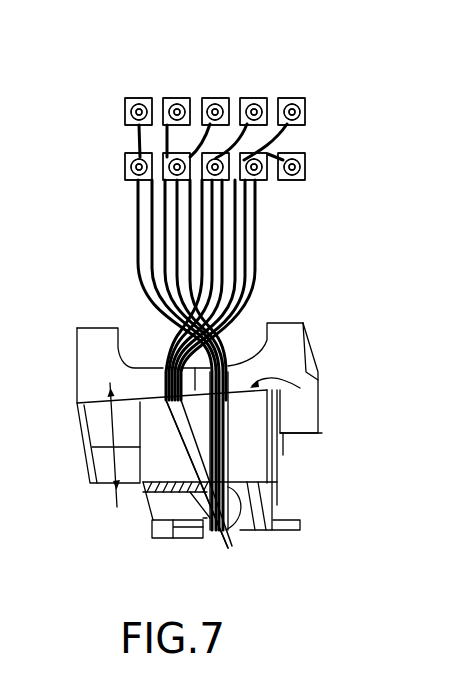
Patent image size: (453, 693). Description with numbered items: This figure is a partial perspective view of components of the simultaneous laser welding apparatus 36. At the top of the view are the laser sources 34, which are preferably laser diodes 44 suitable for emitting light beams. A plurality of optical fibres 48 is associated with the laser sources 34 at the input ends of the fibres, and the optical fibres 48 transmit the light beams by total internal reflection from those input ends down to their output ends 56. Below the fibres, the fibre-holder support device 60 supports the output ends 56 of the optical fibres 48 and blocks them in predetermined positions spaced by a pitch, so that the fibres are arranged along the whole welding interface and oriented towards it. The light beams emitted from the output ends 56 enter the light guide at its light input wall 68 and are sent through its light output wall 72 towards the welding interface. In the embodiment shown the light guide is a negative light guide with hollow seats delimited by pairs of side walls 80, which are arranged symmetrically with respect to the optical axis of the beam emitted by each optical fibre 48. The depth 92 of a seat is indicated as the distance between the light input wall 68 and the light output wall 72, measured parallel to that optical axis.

The simultaneous laser welding apparatus 36 is at (76, 126).
The laser sources 34 is at (284, 98).
The laser diodes 44 is at (215, 139).
The optical fibres 48 is at (163, 242).
The output ends 56 is at (225, 370).
The fibre-holder support device 60 is at (304, 324).
The light input wall 68 is at (323, 430).
The light output wall 72 is at (284, 531).
The side walls 80 is at (176, 446).
The depth 92 is at (70, 445).